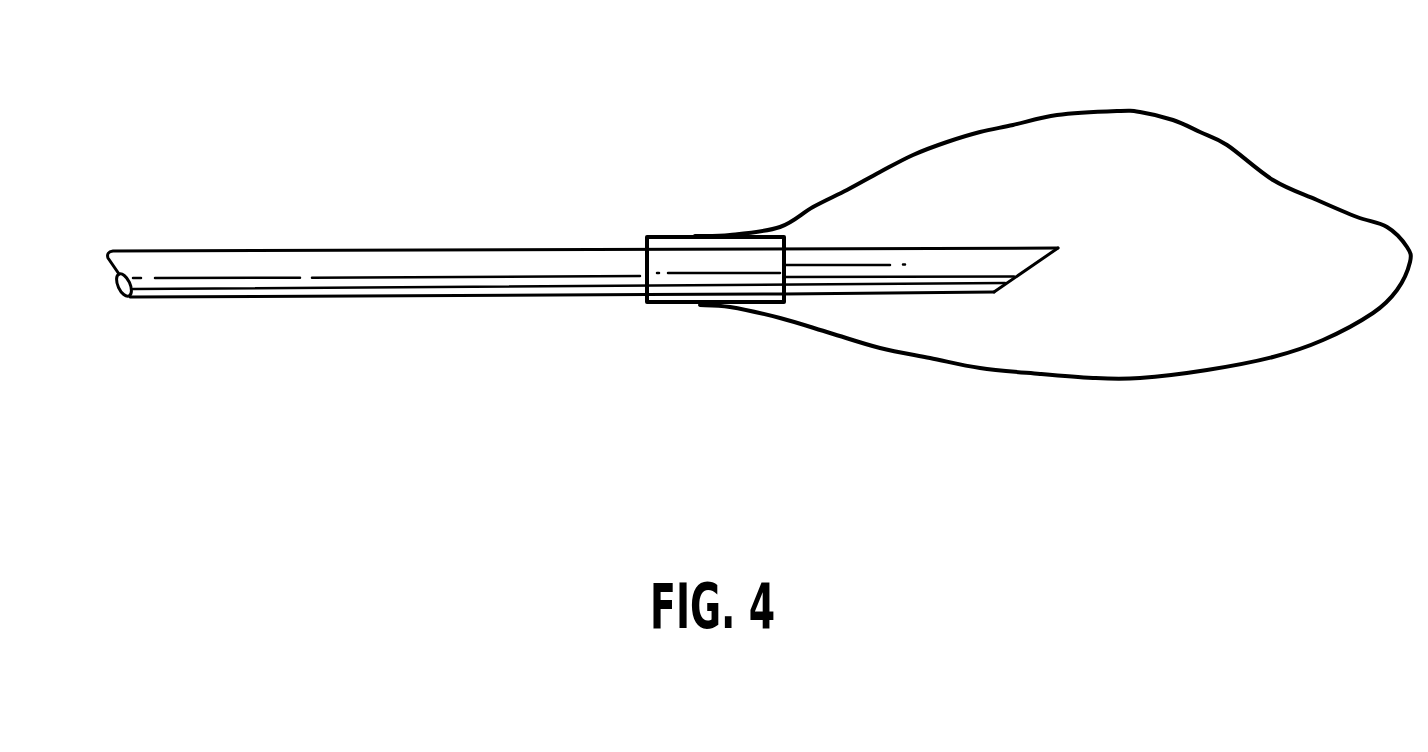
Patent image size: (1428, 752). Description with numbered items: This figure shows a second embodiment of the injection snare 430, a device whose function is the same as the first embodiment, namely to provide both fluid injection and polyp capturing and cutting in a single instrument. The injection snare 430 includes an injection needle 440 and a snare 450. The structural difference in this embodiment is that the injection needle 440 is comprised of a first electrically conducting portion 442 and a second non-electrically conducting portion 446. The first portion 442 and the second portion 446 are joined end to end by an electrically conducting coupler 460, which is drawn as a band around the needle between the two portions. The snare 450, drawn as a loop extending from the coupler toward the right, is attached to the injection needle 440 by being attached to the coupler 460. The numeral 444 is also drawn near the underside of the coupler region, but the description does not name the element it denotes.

The injection snare 430 is at (637, 160).
The injection needle 440 is at (590, 318).
The first electrically conducting portion 442 is at (400, 297).
The shaft portion beneath collar 444 is at (716, 318).
The second non-electrically conducting portion 446 is at (929, 293).
The snare 450 is at (1227, 148).
The electrically conducting coupler 460 is at (680, 235).